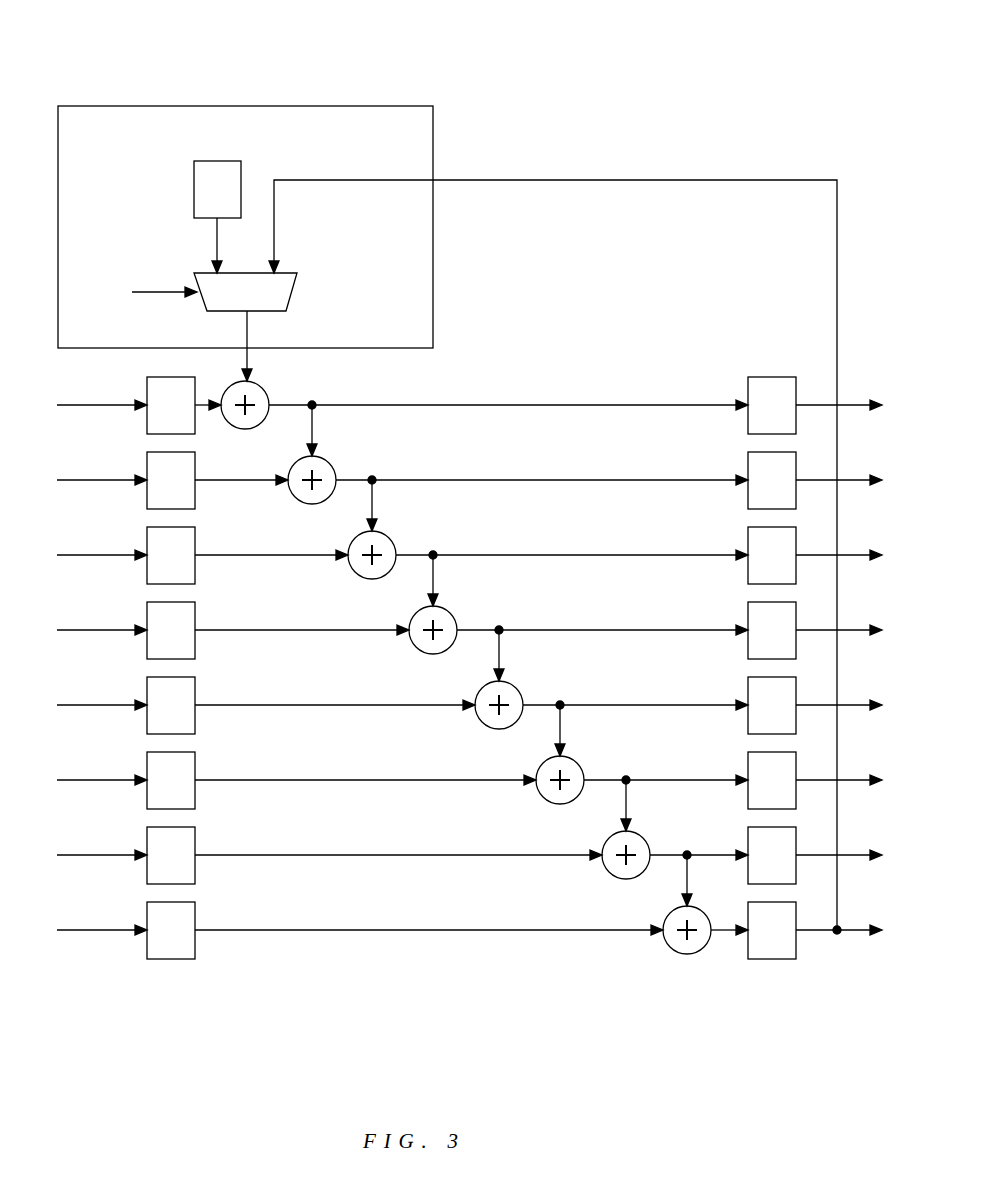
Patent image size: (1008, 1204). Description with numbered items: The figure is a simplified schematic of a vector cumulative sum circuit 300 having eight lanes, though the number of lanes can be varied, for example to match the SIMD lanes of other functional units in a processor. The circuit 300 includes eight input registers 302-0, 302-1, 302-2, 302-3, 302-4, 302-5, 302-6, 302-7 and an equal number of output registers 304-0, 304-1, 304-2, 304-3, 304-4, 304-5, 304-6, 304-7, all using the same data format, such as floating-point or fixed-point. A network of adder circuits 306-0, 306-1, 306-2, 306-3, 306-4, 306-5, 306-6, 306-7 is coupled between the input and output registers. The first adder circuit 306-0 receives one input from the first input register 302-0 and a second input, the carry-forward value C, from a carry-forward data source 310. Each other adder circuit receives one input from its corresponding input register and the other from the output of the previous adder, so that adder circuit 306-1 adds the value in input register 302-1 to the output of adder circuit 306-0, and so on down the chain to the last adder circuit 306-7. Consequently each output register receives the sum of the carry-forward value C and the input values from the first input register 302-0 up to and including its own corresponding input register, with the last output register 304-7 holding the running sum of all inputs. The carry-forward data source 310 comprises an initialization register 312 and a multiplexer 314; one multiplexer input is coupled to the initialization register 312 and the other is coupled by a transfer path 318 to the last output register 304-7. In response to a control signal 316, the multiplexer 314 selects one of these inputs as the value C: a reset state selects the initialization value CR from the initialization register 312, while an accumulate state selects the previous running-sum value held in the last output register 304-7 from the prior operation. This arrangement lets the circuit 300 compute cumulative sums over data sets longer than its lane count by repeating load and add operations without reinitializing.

The vector cumulative sum circuit 300 is at (788, 110).
The carry-forward data source 310 is at (435, 143).
The initialization register 312 is at (194, 200).
The multiplexer 314 is at (297, 288).
The control signal 316 is at (152, 300).
The transfer path 318 is at (600, 180).
The input register 302-0 is at (147, 422).
The input register 302-1 is at (147, 497).
The input register 302-2 is at (147, 572).
The input register 302-3 is at (147, 647).
The input register 302-4 is at (147, 722).
The input register 302-5 is at (147, 797).
The input register 302-6 is at (147, 872).
The input register 302-7 is at (147, 947).
The output register 304-0 is at (748, 392).
The output register 304-1 is at (748, 467).
The output register 304-2 is at (748, 542).
The output register 304-3 is at (748, 617).
The output register 304-4 is at (748, 692).
The output register 304-5 is at (748, 767).
The output register 304-6 is at (748, 842).
The output register 304-7 is at (780, 960).
The adder circuit 306-0 is at (268, 398).
The adder circuit 306-1 is at (335, 473).
The adder circuit 306-2 is at (395, 548).
The adder circuit 306-3 is at (456, 623).
The adder circuit 306-4 is at (482, 722).
The adder circuit 306-5 is at (543, 797).
The adder circuit 306-6 is at (609, 872).
The adder circuit 306-7 is at (668, 951).